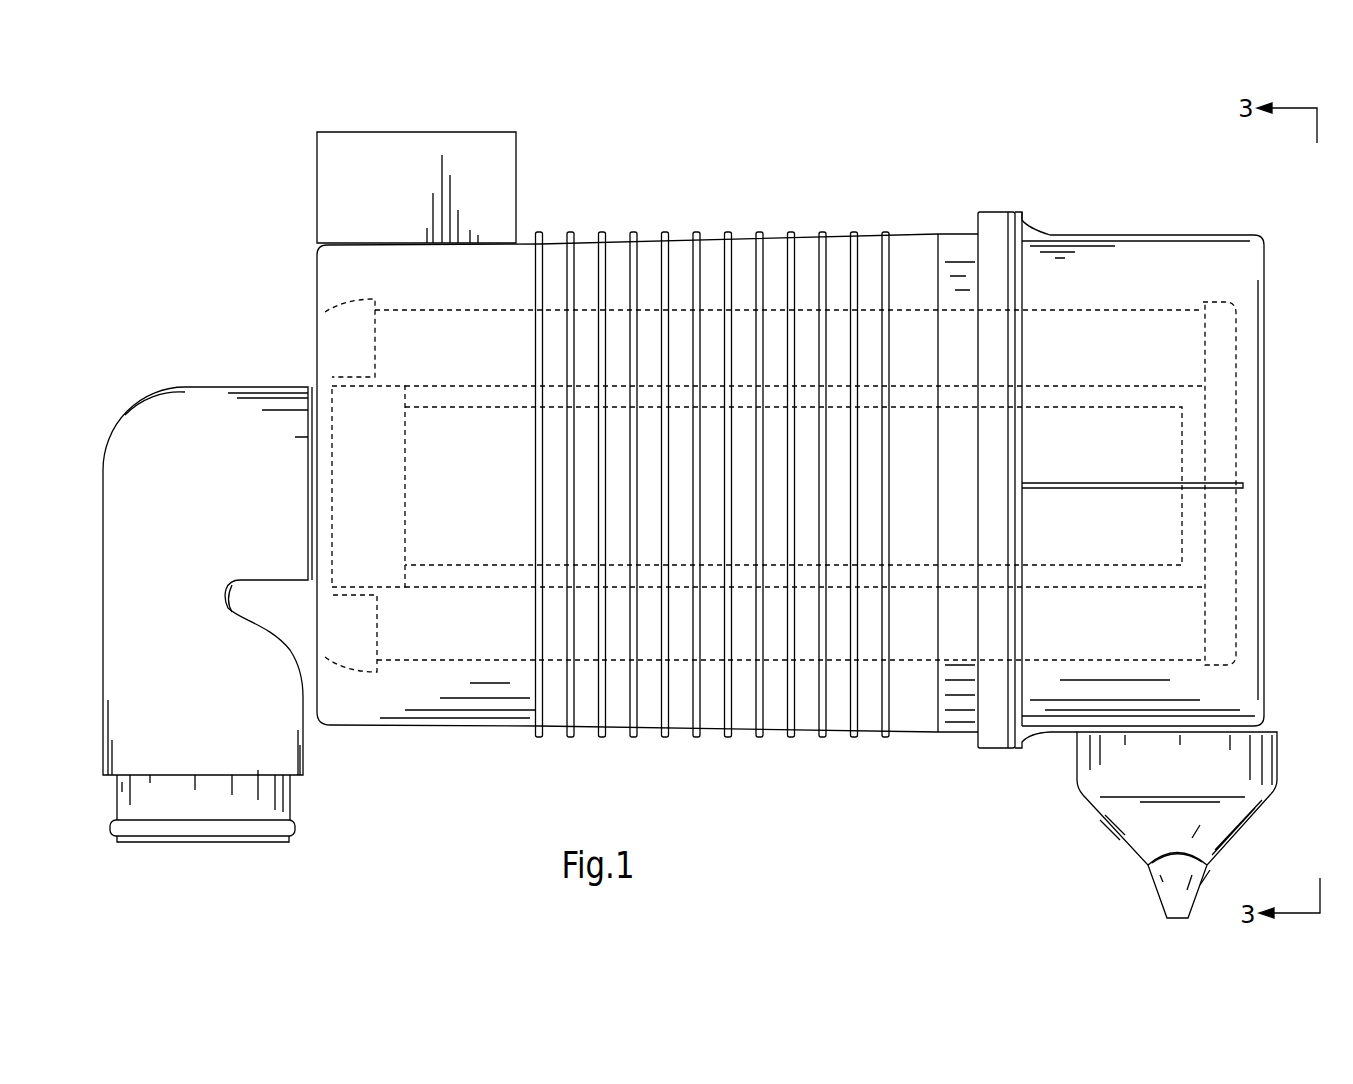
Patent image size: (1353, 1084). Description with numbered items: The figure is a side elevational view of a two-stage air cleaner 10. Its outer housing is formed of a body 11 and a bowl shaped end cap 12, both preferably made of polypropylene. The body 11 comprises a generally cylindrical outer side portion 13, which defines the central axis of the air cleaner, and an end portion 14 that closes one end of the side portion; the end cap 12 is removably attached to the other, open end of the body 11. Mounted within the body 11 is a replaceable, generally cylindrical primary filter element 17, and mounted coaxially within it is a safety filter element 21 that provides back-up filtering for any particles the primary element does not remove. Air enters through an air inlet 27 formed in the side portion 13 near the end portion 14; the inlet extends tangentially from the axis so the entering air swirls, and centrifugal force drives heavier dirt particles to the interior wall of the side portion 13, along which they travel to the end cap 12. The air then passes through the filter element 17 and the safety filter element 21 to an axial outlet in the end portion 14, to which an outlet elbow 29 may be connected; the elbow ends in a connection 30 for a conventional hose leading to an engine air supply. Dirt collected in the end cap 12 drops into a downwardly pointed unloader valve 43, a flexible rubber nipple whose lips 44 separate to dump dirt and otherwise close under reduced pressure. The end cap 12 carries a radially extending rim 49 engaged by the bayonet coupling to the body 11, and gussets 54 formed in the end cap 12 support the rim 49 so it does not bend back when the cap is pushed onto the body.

The air cleaner 10 is at (675, 777).
The body 11 is at (637, 231).
The end cap 12 is at (1159, 255).
The cylindrical outer side portion 13 is at (712, 245).
The end portion 14 is at (316, 363).
The filter element 17 is at (1175, 343).
The safety filter element 21 is at (1145, 450).
The air inlet 27 is at (353, 187).
The outlet elbow 29 is at (207, 397).
The connection 30 is at (275, 797).
The unloader valve 43 is at (1281, 751).
The lips 44 is at (1180, 883).
The rim 49 is at (1000, 222).
The gussets 54 is at (1028, 230).